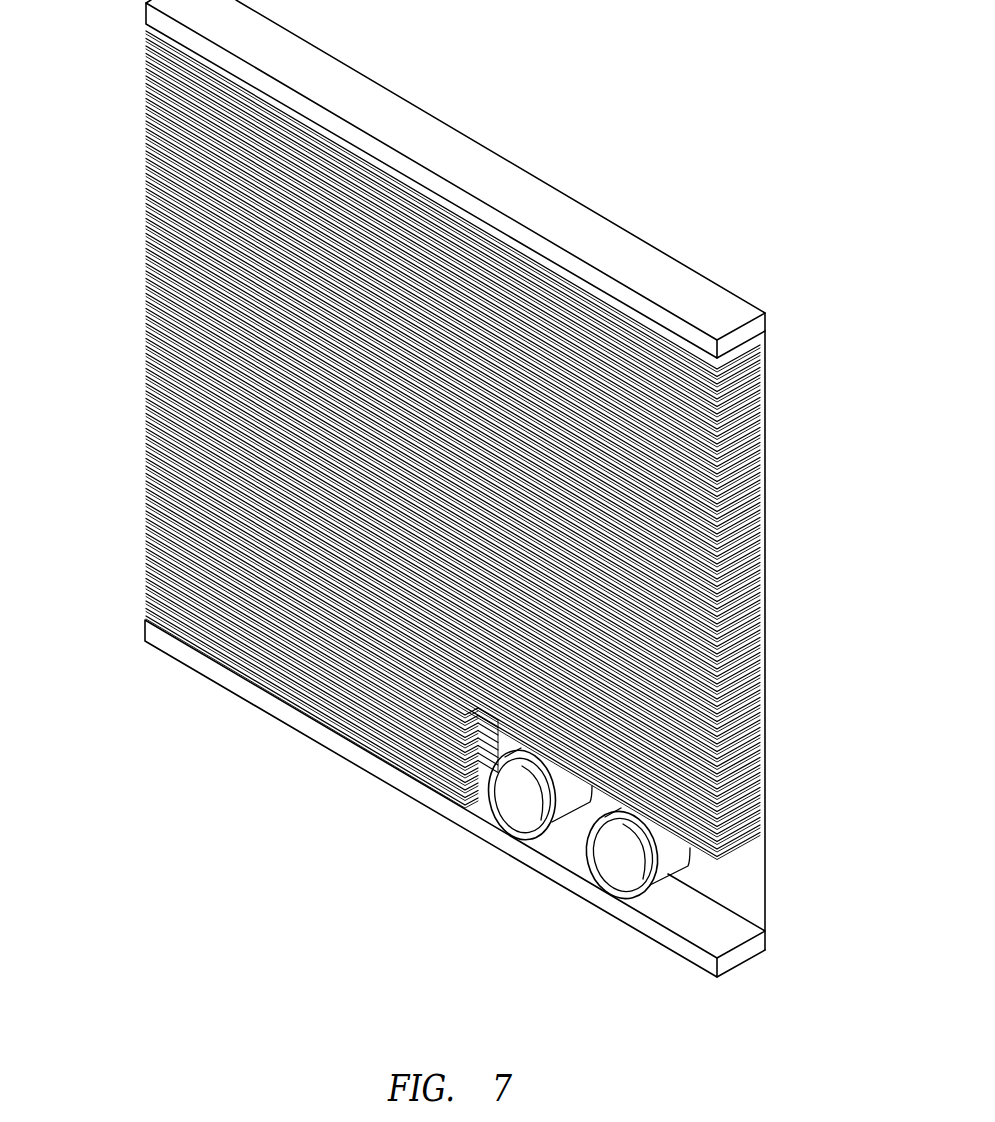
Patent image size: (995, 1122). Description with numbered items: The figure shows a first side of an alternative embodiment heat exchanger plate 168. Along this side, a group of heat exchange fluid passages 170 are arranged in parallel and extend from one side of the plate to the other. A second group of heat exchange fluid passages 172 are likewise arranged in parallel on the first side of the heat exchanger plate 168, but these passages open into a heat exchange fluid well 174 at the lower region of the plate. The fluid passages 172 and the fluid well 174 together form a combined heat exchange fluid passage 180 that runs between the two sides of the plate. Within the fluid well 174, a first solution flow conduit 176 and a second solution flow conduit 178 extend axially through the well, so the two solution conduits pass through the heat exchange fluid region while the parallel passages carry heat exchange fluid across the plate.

The heat exchanger plate 168 is at (449, 494).
The heat exchange fluid passages 170 is at (449, 445).
The heat exchange fluid passages 172 is at (148, 573).
The heat exchange fluid well 174 is at (729, 891).
The first solution flow conduit 176 is at (521, 833).
The second solution flow conduit 178 is at (628, 900).
The combined heat exchange fluid passage 180 is at (478, 806).